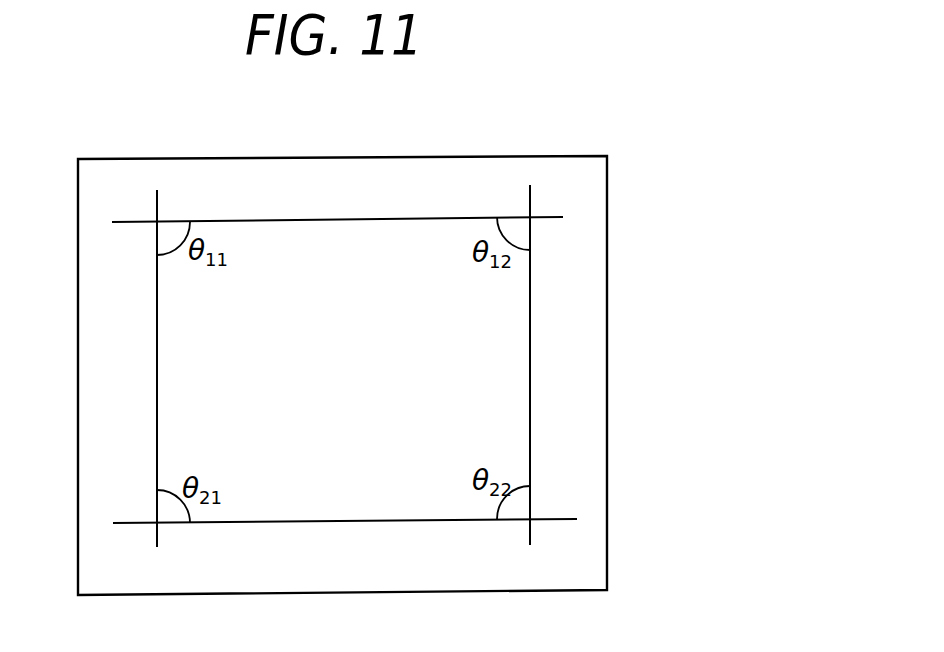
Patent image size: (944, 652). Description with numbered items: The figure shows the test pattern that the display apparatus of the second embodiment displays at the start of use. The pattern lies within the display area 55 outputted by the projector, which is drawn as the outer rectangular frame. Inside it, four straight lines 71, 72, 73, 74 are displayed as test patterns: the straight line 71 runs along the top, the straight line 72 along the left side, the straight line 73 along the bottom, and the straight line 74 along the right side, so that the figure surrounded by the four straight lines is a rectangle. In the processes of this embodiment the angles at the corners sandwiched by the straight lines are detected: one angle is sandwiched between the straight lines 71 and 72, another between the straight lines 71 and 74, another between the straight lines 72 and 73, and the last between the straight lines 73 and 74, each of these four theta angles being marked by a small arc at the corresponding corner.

The display area 55 is at (502, 156).
The straight line 71 is at (357, 222).
The straight line 72 is at (156, 363).
The straight line 73 is at (330, 523).
The straight line 74 is at (530, 360).